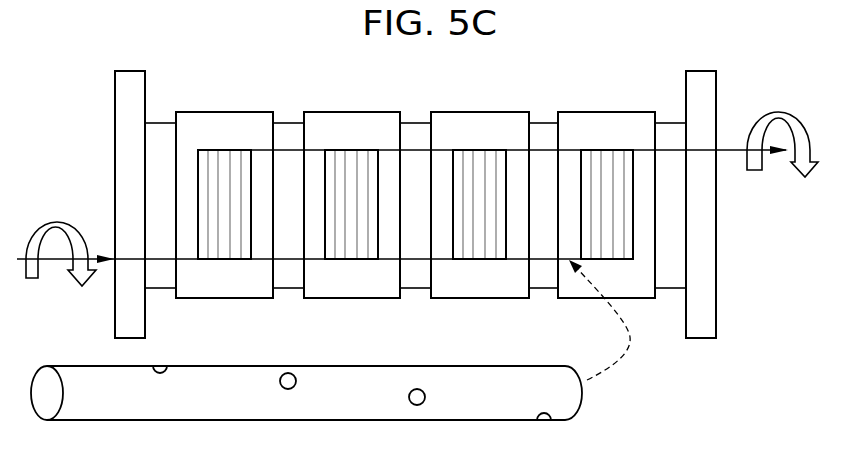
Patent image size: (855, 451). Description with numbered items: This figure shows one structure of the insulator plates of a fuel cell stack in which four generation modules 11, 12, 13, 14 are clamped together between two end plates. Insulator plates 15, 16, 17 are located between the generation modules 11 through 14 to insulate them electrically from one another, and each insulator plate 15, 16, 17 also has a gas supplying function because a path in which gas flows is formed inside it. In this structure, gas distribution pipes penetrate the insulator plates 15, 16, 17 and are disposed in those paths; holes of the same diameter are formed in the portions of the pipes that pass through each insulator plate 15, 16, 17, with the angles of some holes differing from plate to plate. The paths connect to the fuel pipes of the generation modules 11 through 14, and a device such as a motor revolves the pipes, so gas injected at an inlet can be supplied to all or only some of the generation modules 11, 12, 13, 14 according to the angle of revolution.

The generation module 11 is at (218, 297).
The generation module 12 is at (348, 297).
The generation module 13 is at (478, 297).
The generation module 14 is at (632, 297).
The insulator plate 15 is at (294, 122).
The insulator plate 16 is at (423, 122).
The insulator plate 17 is at (552, 122).